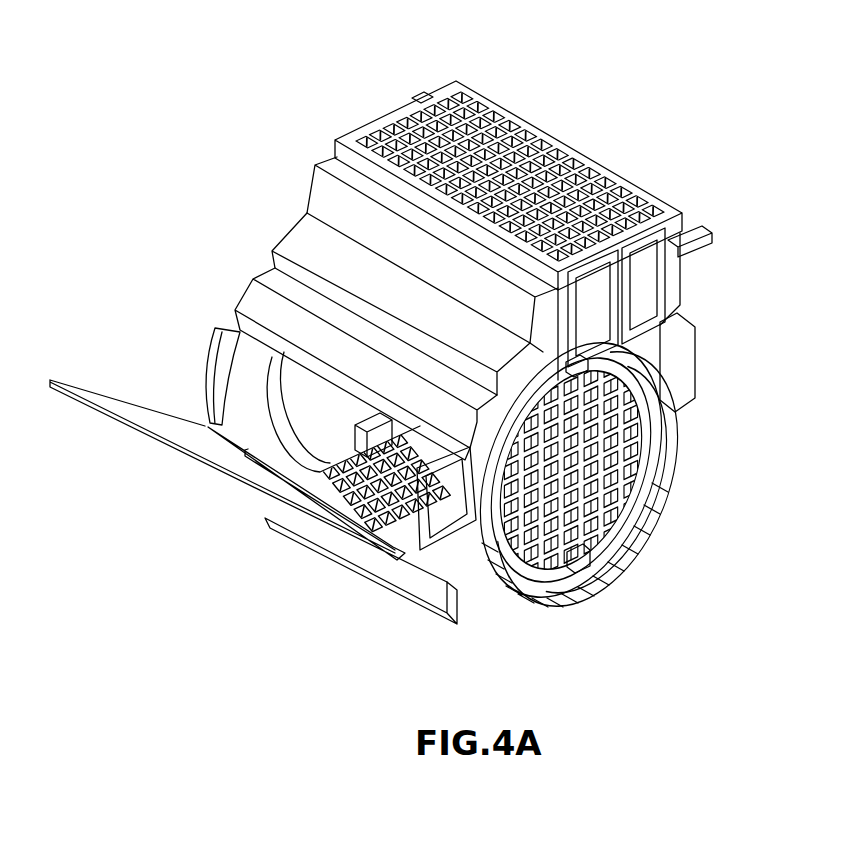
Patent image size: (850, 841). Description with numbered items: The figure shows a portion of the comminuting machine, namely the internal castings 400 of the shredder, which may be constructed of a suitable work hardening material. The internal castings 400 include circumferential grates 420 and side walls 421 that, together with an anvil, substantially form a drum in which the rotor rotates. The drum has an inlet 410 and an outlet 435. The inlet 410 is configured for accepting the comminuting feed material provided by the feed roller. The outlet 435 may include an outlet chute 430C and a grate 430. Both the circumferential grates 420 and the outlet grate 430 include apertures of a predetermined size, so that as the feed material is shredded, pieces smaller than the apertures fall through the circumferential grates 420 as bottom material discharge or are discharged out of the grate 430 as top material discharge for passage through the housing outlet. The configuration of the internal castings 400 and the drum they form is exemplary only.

The internal castings 400 is at (200, 172).
The inlet 410 is at (167, 352).
The circumferential grates 420 is at (573, 537).
The side walls 421 is at (214, 353).
The grate 430 is at (578, 158).
The outlet chute 430C is at (655, 302).
The outlet 435 is at (505, 150).